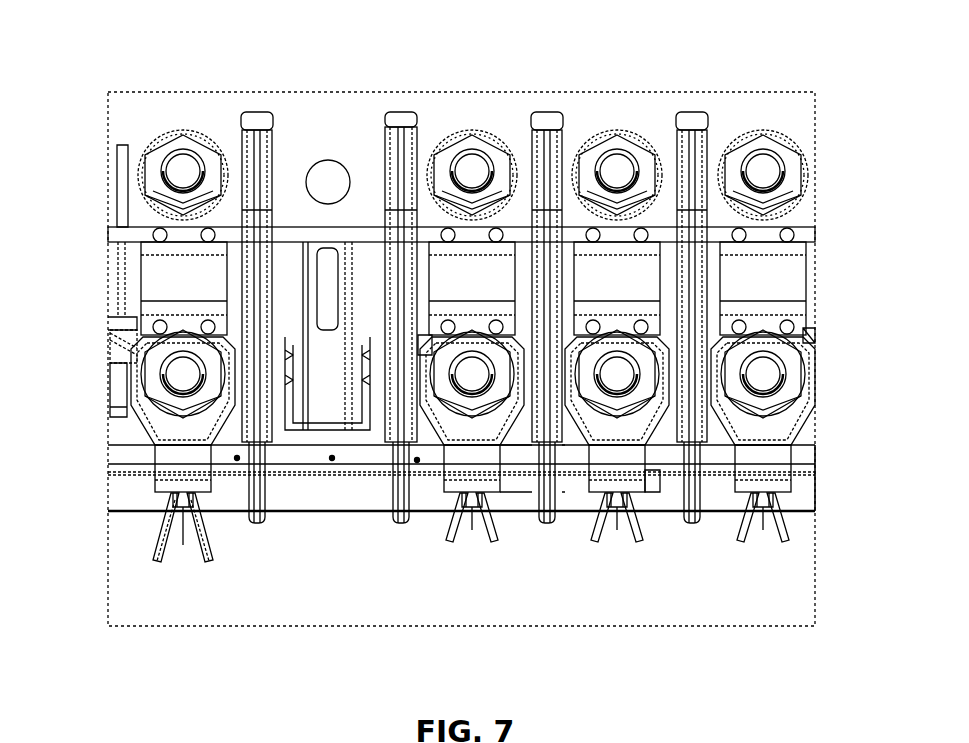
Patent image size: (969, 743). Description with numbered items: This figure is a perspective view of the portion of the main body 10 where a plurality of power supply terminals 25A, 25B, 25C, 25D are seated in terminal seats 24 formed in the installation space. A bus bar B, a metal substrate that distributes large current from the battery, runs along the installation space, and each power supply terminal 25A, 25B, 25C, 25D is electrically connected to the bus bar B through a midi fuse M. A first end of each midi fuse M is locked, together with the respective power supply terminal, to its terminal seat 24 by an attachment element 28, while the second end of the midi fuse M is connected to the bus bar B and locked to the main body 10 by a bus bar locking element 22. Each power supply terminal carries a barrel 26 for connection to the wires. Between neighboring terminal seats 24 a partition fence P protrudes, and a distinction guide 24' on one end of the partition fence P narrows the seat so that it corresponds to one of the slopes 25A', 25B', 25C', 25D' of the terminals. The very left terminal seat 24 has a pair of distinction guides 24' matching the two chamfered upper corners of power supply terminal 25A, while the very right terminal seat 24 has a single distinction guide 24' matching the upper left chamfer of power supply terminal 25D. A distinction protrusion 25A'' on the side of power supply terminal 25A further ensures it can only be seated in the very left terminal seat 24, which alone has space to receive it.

The bus bar B is at (793, 96).
The bus bar locking element 22 is at (193, 140).
The distinction guide 24' is at (459, 194).
The midi fuse M is at (244, 195).
The partition fence P is at (230, 417).
The terminal seat 24 is at (461, 561).
The power supply terminal 25A is at (184, 499).
The barrel 26 is at (155, 562).
The power supply terminal 25B is at (474, 498).
The power supply terminal 25C is at (619, 498).
The power supply terminal 25D is at (765, 498).
The slope 25A' is at (75, 355).
The distinction protrusion 25A'' is at (67, 412).
The slope 25D' is at (822, 325).
The slope 25B' is at (445, 452).
The slope 25C' is at (670, 509).
The attachment element 28 is at (553, 470).
The main body 10 is at (820, 457).